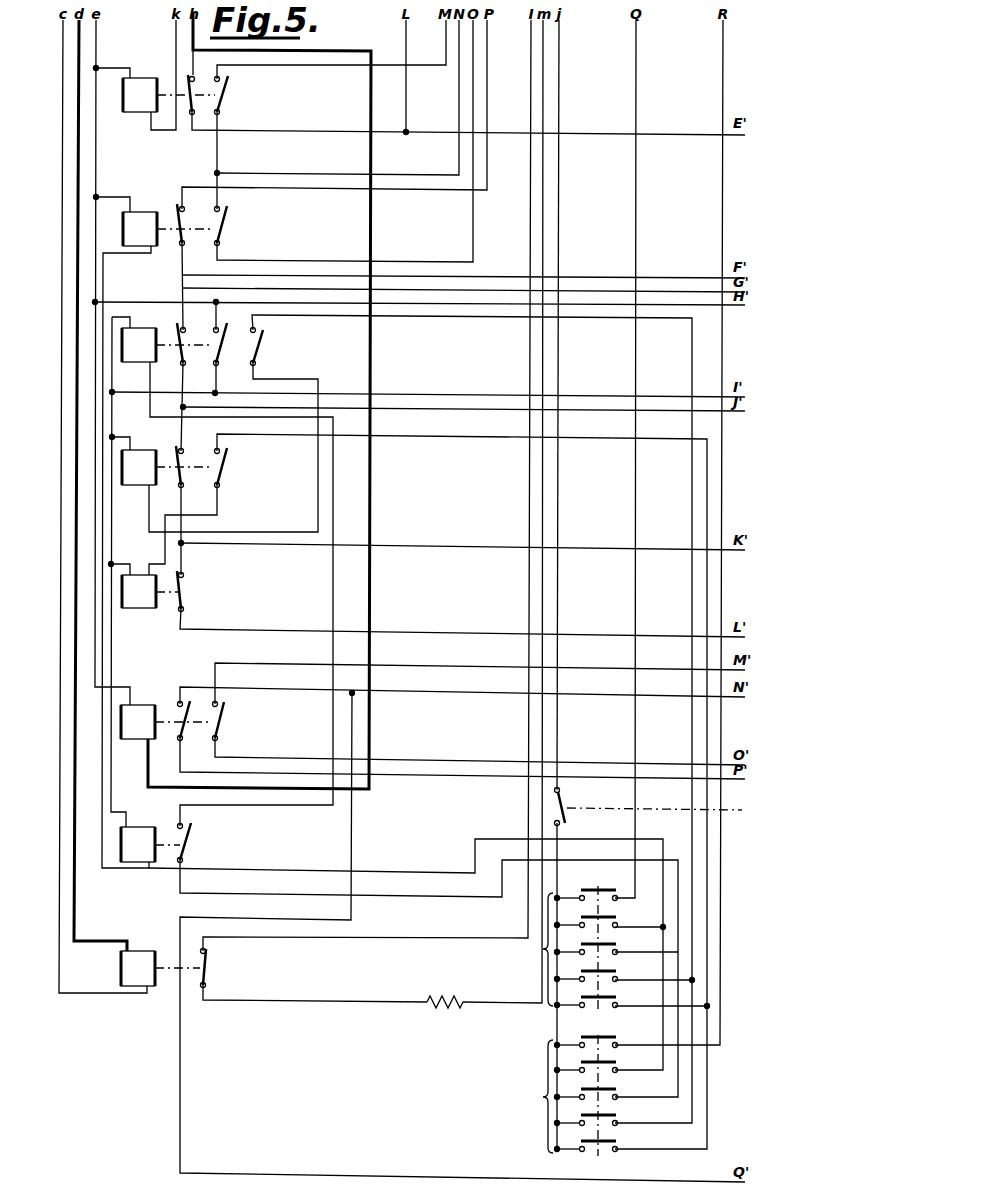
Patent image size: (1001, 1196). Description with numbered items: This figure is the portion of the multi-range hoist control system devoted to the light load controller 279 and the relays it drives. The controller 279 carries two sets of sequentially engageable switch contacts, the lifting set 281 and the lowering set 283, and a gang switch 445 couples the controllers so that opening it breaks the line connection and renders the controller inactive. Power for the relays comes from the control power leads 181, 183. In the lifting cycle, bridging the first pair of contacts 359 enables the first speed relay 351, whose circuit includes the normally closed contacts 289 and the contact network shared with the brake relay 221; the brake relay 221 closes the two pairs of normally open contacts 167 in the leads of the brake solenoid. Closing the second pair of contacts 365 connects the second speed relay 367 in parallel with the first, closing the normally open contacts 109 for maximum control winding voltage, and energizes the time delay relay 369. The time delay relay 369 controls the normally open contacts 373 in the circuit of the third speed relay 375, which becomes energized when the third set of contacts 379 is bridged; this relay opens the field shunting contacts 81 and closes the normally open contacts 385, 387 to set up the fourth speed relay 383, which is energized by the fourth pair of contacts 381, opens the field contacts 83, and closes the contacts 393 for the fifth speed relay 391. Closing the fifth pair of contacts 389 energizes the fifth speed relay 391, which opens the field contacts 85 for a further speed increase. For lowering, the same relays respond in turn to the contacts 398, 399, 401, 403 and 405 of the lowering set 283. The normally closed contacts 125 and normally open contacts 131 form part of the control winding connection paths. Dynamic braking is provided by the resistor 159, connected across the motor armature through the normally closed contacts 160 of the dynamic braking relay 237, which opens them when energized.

The first speed relay 351 is at (150, 105).
The normally closed contacts 289 is at (190, 74).
The normally open contacts 131 is at (223, 76).
The control power lead 183 is at (62, 150).
The second speed relay 367 is at (150, 239).
The normally closed contacts 125 is at (184, 214).
The normally open contacts 109 is at (219, 208).
The control power lead 181 is at (371, 235).
The third speed relay 375 is at (149, 355).
The normally closed relay contacts 81 is at (185, 329).
The normally open contacts 387 is at (230, 340).
The normally open contacts 385 is at (264, 328).
The fourth speed relay 383 is at (149, 477).
The normally closed relay contacts 83 is at (183, 452).
The normally open contacts 393 is at (221, 454).
The fifth speed relay 391 is at (149, 601).
The normally closed relay contacts 85 is at (185, 575).
The brake relay 221 is at (148, 732).
The normally open contacts 167 is at (178, 703).
The time delay relay 369 is at (148, 854).
The normally open contacts 373 is at (184, 826).
The dynamic braking relay 237 is at (147, 978).
The normally closed contacts 160 is at (209, 952).
The resistor 159 is at (446, 998).
The gang switch 445 is at (660, 808).
The light load controller 279 is at (591, 1012).
The set of switch contacts 281 is at (547, 948).
The set of switch contacts 283 is at (547, 1097).
The first pair of contacts 359 is at (617, 901).
The second pair of contacts 365 is at (617, 928).
The third set of contacts 379 is at (617, 955).
The fourth pair of controller contacts 381 is at (617, 982).
The fifth pair of contacts 389 is at (617, 1008).
The first pair of contacts 398 is at (617, 1048).
The second pair of contacts 399 is at (617, 1073).
The third pair of contacts 401 is at (617, 1100).
The fourth set of contacts 403 is at (617, 1126).
The last pair of contacts 405 is at (617, 1152).